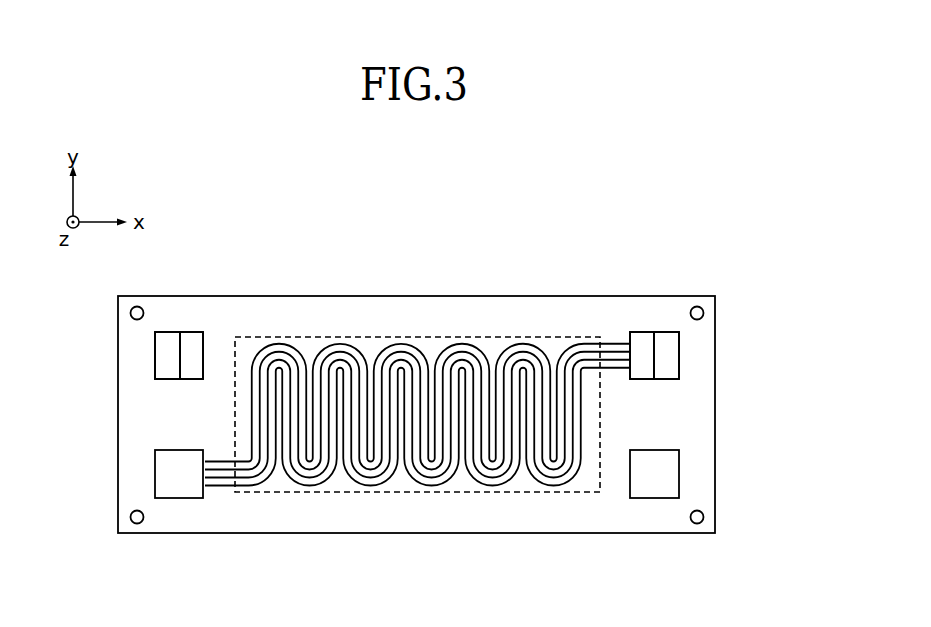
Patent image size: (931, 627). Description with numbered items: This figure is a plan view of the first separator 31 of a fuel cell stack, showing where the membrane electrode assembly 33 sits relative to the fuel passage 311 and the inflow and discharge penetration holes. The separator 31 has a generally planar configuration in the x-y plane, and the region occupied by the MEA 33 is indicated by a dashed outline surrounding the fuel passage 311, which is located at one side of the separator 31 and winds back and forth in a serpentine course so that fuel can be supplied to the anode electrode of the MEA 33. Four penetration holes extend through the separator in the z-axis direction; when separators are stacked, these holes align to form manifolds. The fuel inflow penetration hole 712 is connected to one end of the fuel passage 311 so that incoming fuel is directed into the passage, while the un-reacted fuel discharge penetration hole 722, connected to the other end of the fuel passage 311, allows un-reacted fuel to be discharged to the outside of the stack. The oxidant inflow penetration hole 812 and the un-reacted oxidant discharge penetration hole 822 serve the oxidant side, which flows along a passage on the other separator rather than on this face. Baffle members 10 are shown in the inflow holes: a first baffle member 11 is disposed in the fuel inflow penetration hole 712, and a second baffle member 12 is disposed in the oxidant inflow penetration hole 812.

The connector 10 is at (192, 340).
The first baffle member 11 is at (642, 340).
The second baffle member 12 is at (168, 340).
The first separator 31 is at (700, 443).
The membrane electrode assembly 33 is at (600, 398).
The fuel passage 311 is at (441, 355).
The fuel inflow penetration hole 712 is at (675, 363).
The un-reacted fuel discharge penetration hole 722 is at (170, 498).
The oxidant inflow penetration hole 812 is at (155, 363).
The un-reacted oxidant discharge penetration hole 822 is at (645, 498).